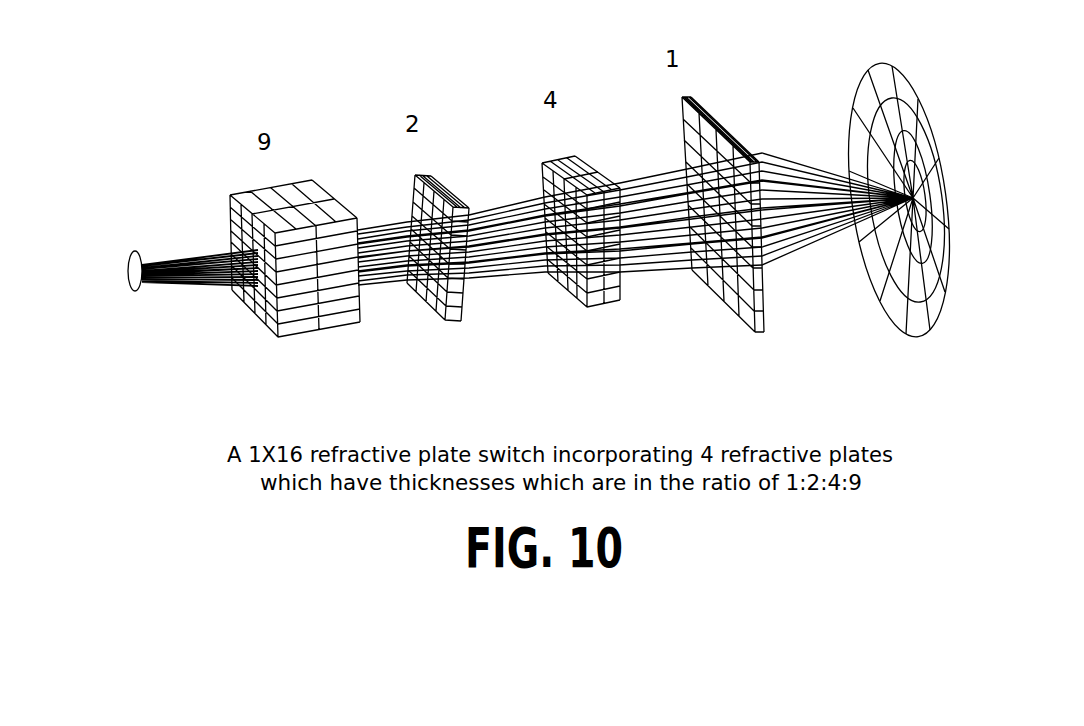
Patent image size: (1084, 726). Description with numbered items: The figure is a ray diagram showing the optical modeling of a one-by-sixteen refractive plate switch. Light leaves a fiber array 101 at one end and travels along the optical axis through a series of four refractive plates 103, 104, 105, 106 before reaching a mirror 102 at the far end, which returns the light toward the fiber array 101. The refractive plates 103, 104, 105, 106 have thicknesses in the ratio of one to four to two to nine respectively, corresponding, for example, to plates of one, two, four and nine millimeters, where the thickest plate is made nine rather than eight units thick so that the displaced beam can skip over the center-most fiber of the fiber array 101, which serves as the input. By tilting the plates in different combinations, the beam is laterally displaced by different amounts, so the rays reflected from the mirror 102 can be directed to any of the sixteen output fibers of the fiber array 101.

The fiber array 101 is at (160, 304).
The mirror 102 is at (870, 328).
The refractive plate 103 is at (702, 107).
The refractive plate 104 is at (448, 182).
The refractive plate 105 is at (588, 166).
The refractive plate 106 is at (313, 182).